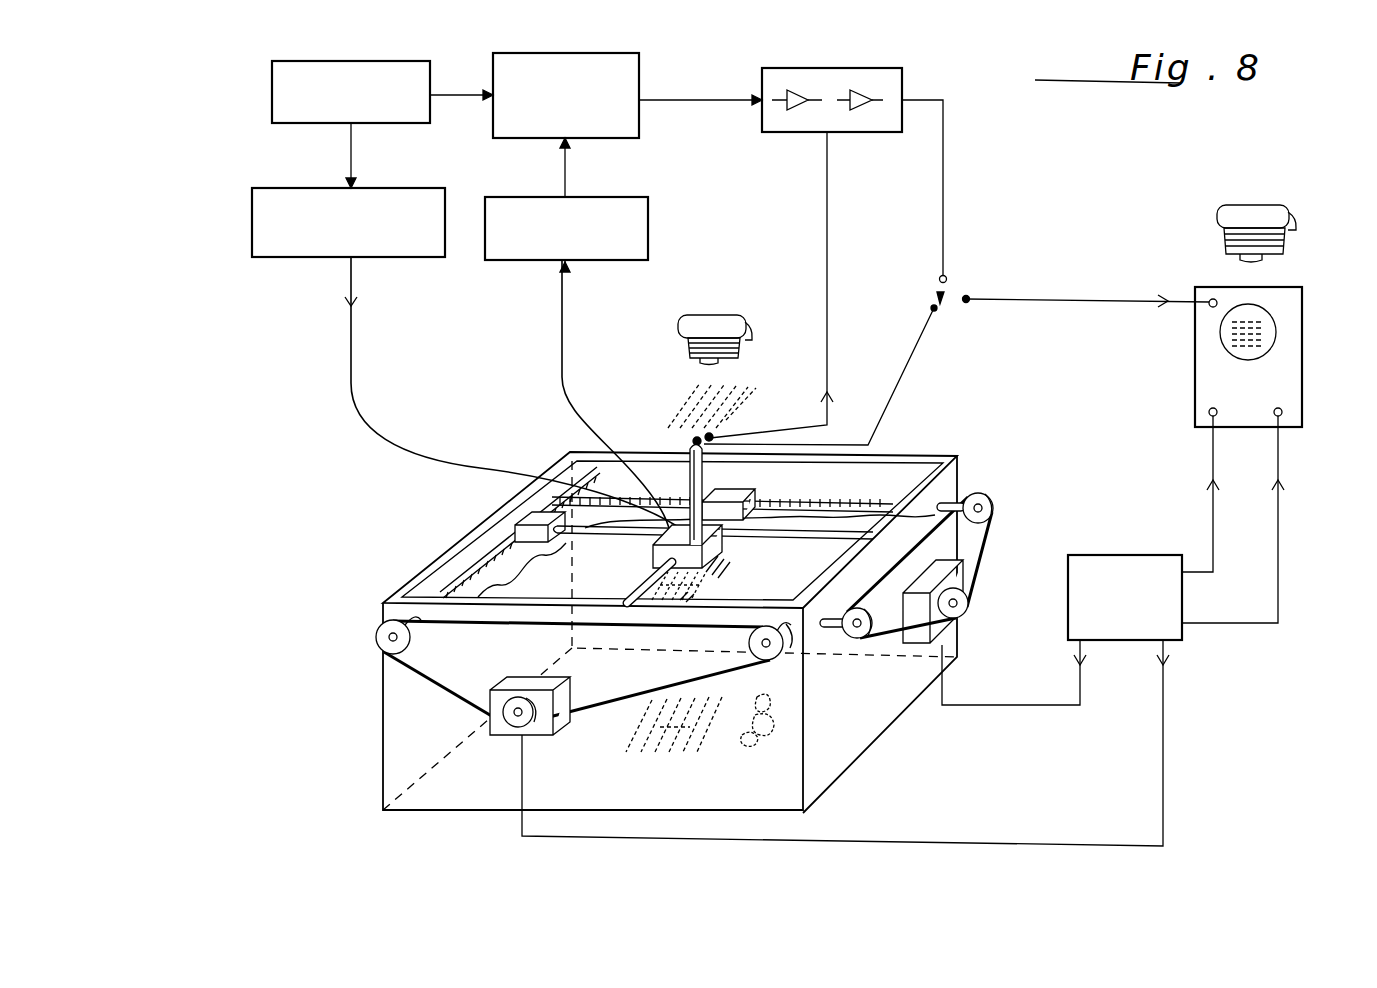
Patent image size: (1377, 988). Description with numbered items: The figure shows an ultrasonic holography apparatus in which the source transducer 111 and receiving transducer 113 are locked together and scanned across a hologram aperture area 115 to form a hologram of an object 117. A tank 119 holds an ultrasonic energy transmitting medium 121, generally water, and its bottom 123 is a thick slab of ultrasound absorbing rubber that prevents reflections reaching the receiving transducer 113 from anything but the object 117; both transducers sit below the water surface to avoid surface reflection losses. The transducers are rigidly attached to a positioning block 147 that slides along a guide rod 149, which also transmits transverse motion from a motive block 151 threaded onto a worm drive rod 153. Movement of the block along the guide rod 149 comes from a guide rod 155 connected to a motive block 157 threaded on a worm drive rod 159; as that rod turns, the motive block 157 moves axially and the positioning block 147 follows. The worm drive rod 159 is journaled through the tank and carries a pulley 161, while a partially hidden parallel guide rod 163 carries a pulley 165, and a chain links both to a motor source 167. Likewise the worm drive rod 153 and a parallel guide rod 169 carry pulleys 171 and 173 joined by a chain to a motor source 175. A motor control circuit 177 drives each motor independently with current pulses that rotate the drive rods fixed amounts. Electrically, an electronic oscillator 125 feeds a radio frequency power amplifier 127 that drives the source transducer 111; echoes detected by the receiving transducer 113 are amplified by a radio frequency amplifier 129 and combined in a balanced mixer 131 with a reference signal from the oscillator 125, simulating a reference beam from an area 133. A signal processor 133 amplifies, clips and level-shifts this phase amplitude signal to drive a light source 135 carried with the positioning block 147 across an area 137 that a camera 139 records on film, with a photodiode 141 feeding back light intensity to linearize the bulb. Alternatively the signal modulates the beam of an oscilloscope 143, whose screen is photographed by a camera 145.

The source transducer 111 is at (648, 576).
The receiving transducer 113 is at (705, 578).
The hologram aperture area 115 is at (688, 594).
The object 117 is at (770, 745).
The tank 119 is at (412, 582).
The ultrasonic energy transmitting medium 121 is at (525, 583).
The bottom of the tank 123 is at (828, 755).
The electronic oscillator 125 is at (283, 97).
The radio frequency power amplifier 127 is at (270, 192).
The radio frequency amplifier 129 is at (628, 212).
The balanced mixer 131 is at (630, 76).
The signal processor 133 is at (851, 78).
The light source 135 is at (692, 440).
The area 137 is at (736, 388).
The camera 139 is at (718, 318).
The photodiode 141 is at (712, 437).
The oscilloscope 143 is at (1285, 378).
The camera 145 is at (1230, 223).
The positioning block 147 is at (710, 553).
The guide rod 149 is at (825, 535).
The motive block 151 is at (533, 521).
The worm drive rod 153 is at (505, 548).
The guide rod 155 is at (648, 582).
The motive block 157 is at (742, 496).
The worm drive rod 159 is at (828, 500).
The pulley 161 is at (990, 515).
The parallel guide rod 163 is at (828, 628).
The pulley 165 is at (868, 638).
The motor source 167 is at (962, 579).
The parallel guide rod 169 is at (786, 630).
The pulley 171 is at (378, 641).
The pulley 173 is at (750, 650).
The motor source 175 is at (543, 737).
The motor control circuit 177 is at (1120, 565).